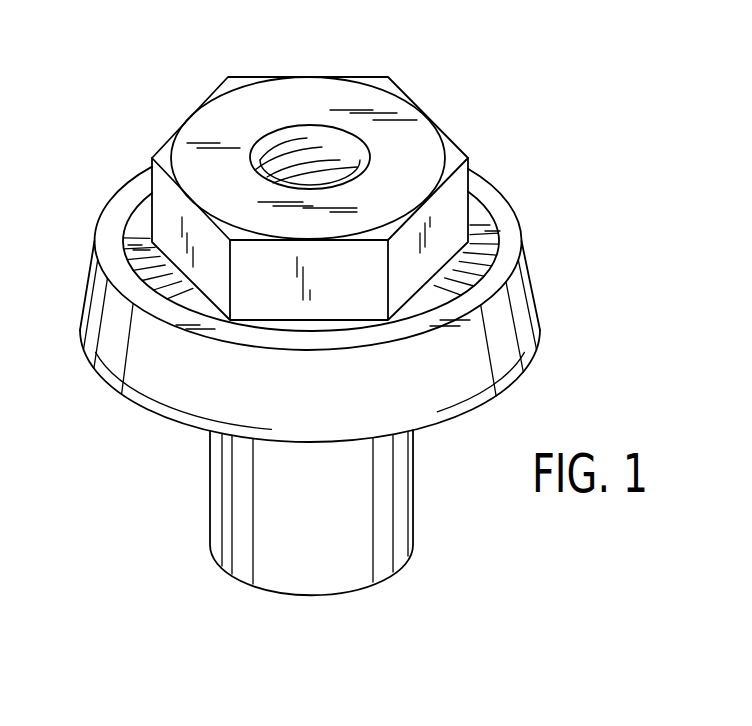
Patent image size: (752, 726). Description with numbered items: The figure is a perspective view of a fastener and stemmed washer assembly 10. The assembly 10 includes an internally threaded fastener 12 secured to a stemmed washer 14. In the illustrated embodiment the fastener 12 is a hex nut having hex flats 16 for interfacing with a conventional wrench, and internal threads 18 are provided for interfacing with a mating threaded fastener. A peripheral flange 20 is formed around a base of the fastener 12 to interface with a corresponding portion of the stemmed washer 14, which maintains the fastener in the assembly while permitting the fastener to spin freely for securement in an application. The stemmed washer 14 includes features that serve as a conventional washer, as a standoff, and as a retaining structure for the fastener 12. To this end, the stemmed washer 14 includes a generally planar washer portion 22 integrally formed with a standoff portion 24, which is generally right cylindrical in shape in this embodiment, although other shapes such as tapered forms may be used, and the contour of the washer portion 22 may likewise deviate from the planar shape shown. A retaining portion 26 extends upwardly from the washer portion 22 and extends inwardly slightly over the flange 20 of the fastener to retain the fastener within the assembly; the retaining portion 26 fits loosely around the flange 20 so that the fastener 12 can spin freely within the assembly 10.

The assembly 10 is at (100, 84).
The internally threaded fastener 12 is at (398, 102).
The stemmed washer 14 is at (494, 395).
The hex flats 16 is at (252, 250).
The internal threads 18 is at (318, 148).
The peripheral flange 20 is at (117, 210).
The washer portion 22 is at (113, 383).
The standoff portion 24 is at (238, 558).
The retaining portion 26 is at (92, 288).